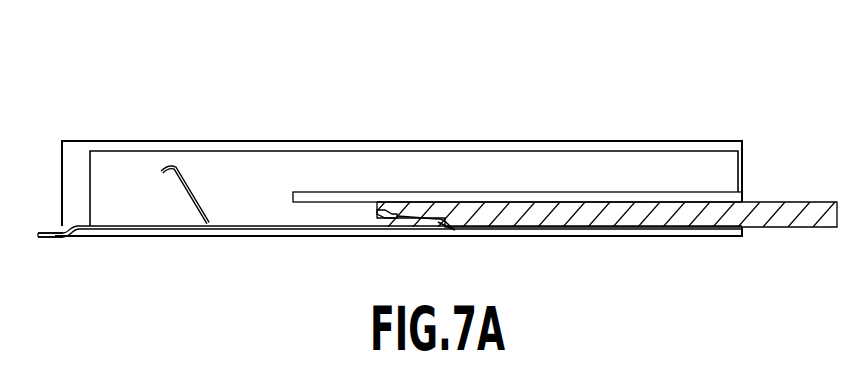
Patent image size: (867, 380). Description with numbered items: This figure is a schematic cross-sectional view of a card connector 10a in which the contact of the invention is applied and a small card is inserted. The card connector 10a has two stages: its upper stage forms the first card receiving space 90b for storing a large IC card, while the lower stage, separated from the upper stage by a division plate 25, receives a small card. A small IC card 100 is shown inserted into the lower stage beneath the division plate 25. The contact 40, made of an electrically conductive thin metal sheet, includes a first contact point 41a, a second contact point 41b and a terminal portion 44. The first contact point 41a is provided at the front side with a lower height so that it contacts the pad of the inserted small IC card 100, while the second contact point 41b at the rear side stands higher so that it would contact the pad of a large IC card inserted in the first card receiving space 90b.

The card connector 10a is at (299, 134).
The contact 40 is at (231, 238).
The terminal portion 44 is at (45, 238).
The second contact point 41b is at (190, 187).
The first contact point 41a is at (450, 216).
The first card receiving space 90b is at (533, 191).
The division plate 25 is at (610, 191).
The small IC card 100 is at (793, 220).